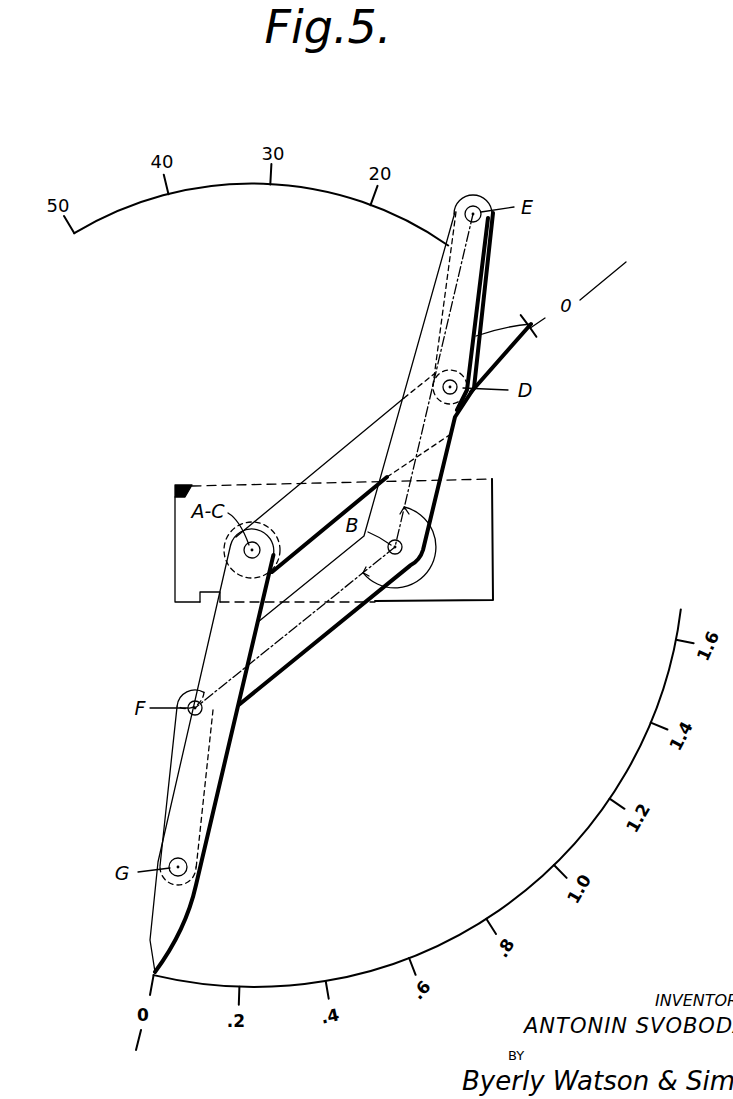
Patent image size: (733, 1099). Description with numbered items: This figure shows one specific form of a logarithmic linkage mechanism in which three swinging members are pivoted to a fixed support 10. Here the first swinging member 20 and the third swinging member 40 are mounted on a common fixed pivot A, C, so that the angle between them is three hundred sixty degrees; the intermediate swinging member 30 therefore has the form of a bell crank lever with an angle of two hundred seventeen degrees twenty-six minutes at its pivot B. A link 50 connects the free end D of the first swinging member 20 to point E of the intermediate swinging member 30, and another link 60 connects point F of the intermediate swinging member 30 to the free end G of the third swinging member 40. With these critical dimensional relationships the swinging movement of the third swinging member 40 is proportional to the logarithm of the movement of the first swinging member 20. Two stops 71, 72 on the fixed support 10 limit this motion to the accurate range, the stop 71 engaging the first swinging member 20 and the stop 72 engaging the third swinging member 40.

The fixed support 10 is at (175, 561).
The first swinging member 20 is at (353, 446).
The intermediate swinging member 30 is at (448, 450).
The third swinging member 40 is at (228, 742).
The link 50 is at (483, 313).
The link 60 is at (172, 777).
The stop 71 is at (180, 485).
The stop 72 is at (205, 603).